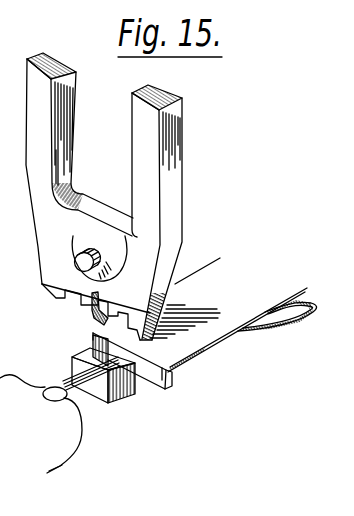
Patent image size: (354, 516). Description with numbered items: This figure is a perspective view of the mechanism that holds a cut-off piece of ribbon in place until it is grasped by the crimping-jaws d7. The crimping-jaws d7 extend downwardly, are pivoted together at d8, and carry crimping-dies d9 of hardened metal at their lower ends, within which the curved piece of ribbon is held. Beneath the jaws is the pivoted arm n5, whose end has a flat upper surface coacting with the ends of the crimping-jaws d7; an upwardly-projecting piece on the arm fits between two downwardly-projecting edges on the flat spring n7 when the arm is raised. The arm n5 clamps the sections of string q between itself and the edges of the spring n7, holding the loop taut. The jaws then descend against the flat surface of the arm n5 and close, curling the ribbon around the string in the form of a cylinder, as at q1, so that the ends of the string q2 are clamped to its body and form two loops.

The crimping-jaws d7 is at (137, 182).
The pivot of the crimping-jaws d8 is at (87, 250).
The crimping-dies d9 is at (80, 306).
The curled ribbon cylinder q1 is at (99, 320).
The string q2 is at (269, 323).
The thread q is at (72, 438).
The pivoted arm n5 is at (126, 392).
The flat spring n7 is at (183, 349).